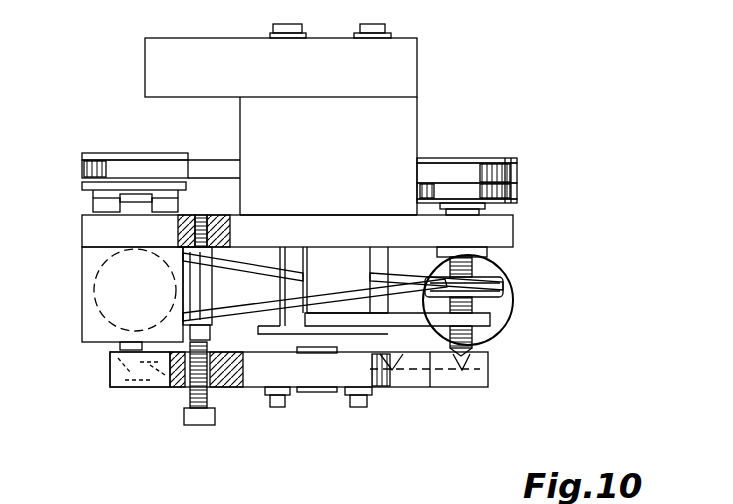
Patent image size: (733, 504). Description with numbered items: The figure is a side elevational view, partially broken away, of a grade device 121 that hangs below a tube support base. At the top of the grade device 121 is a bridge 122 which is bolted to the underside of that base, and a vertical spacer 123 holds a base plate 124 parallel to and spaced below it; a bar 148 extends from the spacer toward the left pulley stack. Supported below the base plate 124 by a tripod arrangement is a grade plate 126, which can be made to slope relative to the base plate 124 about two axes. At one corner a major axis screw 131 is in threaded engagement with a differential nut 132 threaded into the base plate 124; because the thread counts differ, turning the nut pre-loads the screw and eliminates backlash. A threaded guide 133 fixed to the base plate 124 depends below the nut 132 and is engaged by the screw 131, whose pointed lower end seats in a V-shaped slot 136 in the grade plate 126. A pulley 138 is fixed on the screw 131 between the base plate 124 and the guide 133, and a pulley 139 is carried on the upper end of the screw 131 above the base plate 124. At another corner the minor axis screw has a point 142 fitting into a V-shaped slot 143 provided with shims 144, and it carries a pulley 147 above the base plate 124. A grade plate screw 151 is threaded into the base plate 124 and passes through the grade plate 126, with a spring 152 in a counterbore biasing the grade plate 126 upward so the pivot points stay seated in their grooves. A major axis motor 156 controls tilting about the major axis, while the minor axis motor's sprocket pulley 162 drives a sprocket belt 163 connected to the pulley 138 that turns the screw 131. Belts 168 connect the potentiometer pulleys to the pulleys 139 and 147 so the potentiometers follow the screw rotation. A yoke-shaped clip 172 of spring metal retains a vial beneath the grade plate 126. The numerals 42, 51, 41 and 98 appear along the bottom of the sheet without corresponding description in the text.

The bridge 122 is at (308, 81).
The vertical spacer 123 is at (352, 170).
The pulley 147 is at (115, 152).
The connecting bar 148 is at (220, 160).
The belts 168 is at (450, 175).
The pulley 139 is at (500, 160).
The differential nut 132 is at (487, 207).
The base plate 124 is at (98, 225).
The grade device 121 is at (72, 284).
The sprocket pulley 162 is at (108, 324).
The sprocket belt 163 is at (268, 305).
The yoke-shaped clip 172 is at (305, 392).
The major axis screw 131 is at (498, 264).
The pulley 138 is at (505, 284).
The major axis motor 156 is at (510, 316).
The threaded guide 133 is at (470, 390).
The V-shaped slot 136 is at (388, 372).
The point 142 is at (110, 366).
The grade plate 126 is at (112, 388).
The shims 144 is at (138, 388).
The V-shaped slot 143 is at (168, 390).
The grade plate screw 151 is at (205, 426).
The spring 152 is at (212, 392).
The reference numeral 42 is at (102, 494).
The reference numeral 51 is at (186, 494).
The reference numeral 41 is at (277, 494).
The reference numeral 98 is at (305, 494).